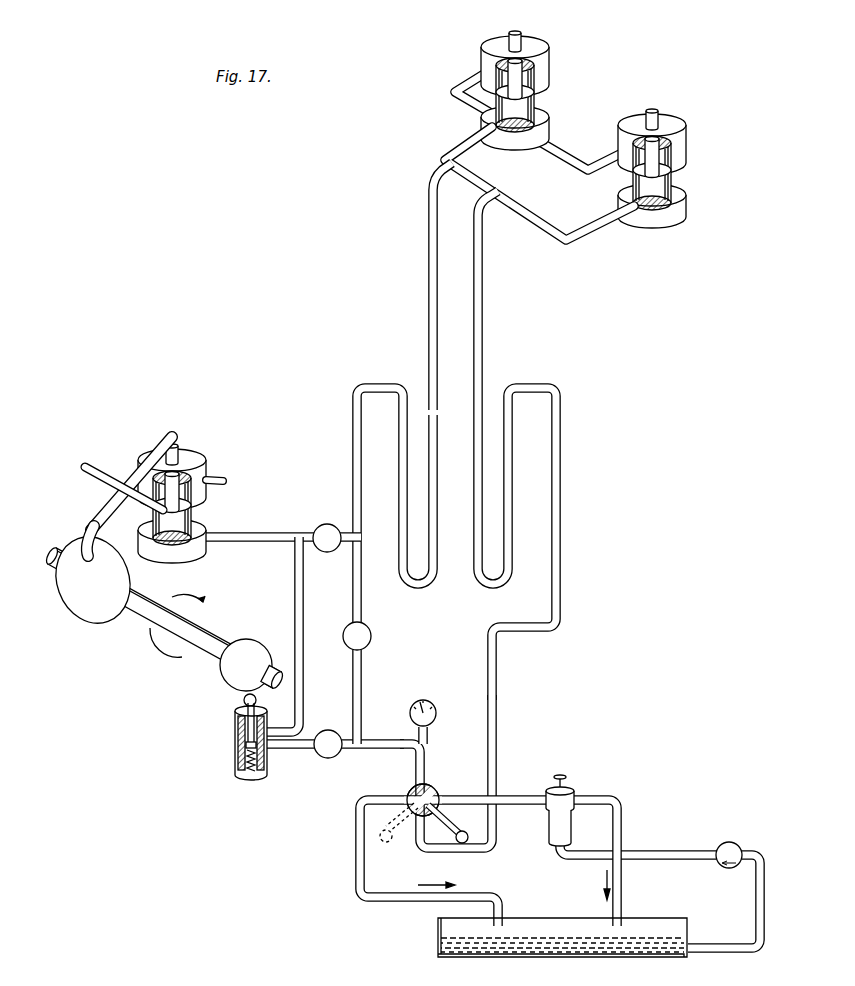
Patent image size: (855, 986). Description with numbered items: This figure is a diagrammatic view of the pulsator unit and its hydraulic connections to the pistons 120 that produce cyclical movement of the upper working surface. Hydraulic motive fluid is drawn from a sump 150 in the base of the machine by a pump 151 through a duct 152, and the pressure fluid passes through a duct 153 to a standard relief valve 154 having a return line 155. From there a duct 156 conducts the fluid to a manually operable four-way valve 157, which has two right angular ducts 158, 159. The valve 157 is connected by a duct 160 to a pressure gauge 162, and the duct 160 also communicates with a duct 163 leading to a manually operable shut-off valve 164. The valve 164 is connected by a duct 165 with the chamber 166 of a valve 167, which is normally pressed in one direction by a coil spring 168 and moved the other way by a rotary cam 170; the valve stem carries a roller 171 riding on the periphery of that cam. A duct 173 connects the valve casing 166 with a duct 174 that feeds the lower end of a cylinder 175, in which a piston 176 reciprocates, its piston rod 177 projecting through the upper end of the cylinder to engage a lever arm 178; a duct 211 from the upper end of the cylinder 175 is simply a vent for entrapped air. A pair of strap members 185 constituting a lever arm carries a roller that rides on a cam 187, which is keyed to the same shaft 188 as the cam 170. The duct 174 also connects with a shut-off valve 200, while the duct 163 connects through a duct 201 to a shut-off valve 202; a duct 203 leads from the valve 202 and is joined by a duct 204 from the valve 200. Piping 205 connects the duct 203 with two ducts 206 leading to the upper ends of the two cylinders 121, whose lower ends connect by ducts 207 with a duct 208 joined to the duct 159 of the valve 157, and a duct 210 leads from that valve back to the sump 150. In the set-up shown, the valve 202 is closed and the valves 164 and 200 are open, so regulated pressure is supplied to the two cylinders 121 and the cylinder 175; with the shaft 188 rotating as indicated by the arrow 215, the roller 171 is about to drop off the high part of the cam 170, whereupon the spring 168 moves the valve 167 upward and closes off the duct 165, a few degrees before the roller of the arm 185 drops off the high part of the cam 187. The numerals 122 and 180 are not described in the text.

The piston 120 is at (543, 101).
The cylinder 121 is at (548, 63).
The actuating stem 122 is at (523, 40).
The sump 150 is at (507, 956).
The pump 151 is at (737, 844).
The duct 152 is at (757, 901).
The duct 153 is at (663, 852).
The relief valve 154 is at (550, 828).
The return line 155 is at (618, 797).
The duct 156 is at (468, 797).
The four-way valve 157 is at (410, 790).
The right angular duct 158 is at (430, 786).
The right angular duct 159 is at (407, 808).
The duct 160 is at (425, 759).
The pressure gauge 162 is at (433, 703).
The duct 163 is at (380, 739).
The shut-off valve 164 is at (322, 758).
The duct 165 is at (289, 748).
The valve chamber 166 is at (237, 742).
The valve 167 is at (245, 731).
The coil spring 168 is at (247, 776).
The rotary cam 170 is at (250, 647).
The roller 171 is at (239, 700).
The duct 173 is at (305, 684).
The duct 174 is at (263, 534).
The cylinder 175 is at (190, 553).
The piston 176 is at (197, 515).
The piston rod 177 is at (179, 452).
The lever arm 178 is at (128, 462).
The pivot rod 180 is at (92, 475).
The strap members 185 is at (112, 517).
The cam 187 is at (88, 614).
The shaft 188 is at (141, 594).
The shut-off valve 200 is at (325, 525).
The duct 201 is at (362, 700).
The shut-off valve 202 is at (372, 636).
The duct 203 is at (360, 578).
The duct 204 is at (345, 546).
The piping 205 is at (428, 318).
The duct 206 is at (465, 101).
The duct 207 is at (447, 154).
The duct 208 is at (481, 383).
The duct 210 is at (357, 856).
The vent duct 211 is at (212, 476).
The arrow 215 is at (152, 658).